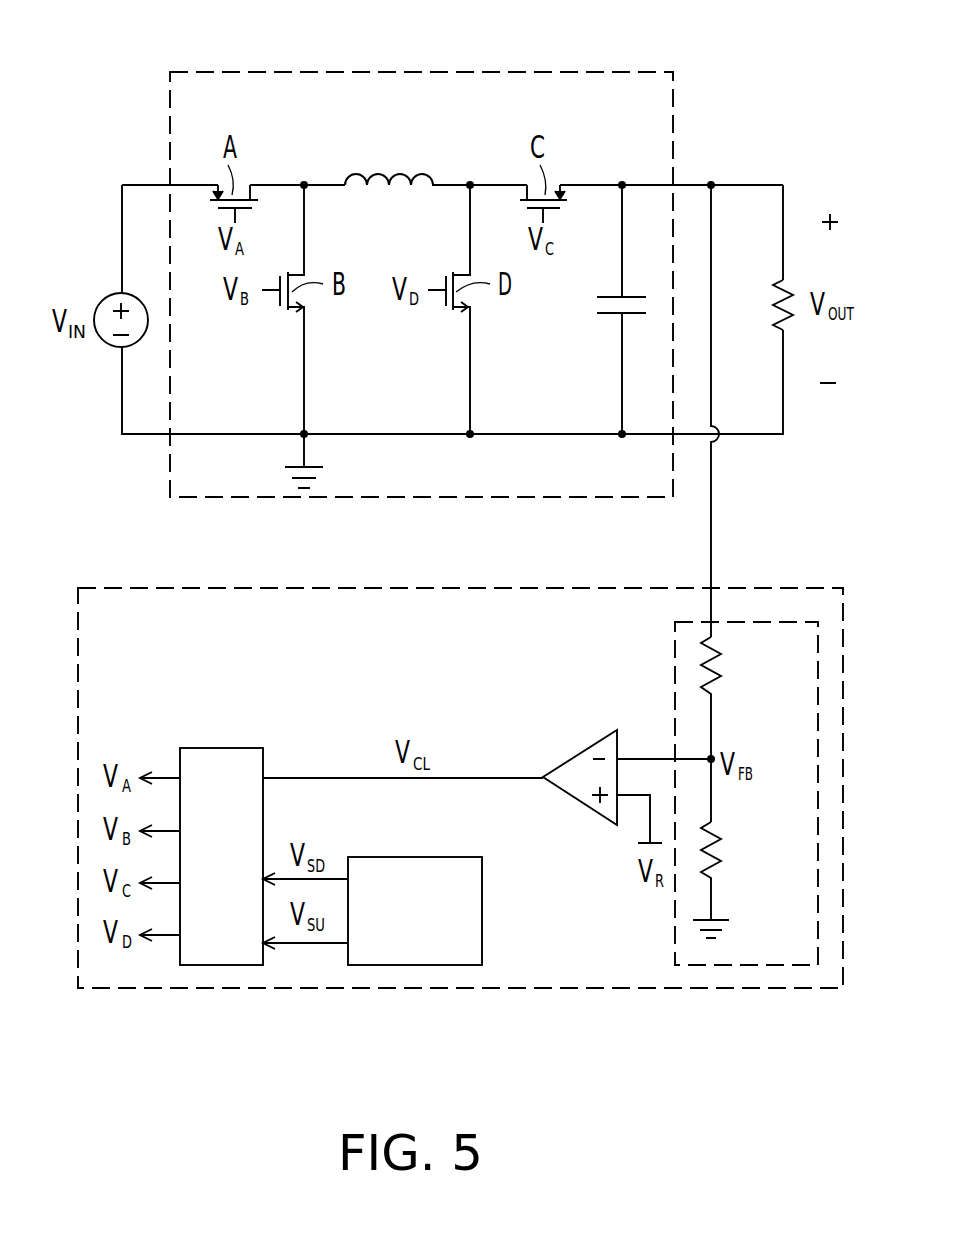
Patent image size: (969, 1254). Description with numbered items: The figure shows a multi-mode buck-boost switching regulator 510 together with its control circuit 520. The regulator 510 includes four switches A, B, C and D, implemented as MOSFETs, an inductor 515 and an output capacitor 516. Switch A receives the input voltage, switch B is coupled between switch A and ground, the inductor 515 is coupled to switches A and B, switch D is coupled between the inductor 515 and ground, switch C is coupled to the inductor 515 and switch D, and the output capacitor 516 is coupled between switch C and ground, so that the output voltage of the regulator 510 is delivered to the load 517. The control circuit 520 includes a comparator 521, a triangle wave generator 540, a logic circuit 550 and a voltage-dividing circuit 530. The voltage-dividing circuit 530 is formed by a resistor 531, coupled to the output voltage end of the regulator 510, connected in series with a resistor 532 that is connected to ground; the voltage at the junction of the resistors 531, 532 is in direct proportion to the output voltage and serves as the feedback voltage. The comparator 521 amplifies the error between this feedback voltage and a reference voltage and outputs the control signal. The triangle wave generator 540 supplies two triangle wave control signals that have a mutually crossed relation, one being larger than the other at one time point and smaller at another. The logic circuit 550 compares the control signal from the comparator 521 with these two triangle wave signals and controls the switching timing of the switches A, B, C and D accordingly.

The multi-mode buck-boost switching regulator 510 is at (473, 72).
The inductor 515 is at (378, 172).
The output capacitor 516 is at (605, 316).
The load 517 is at (773, 318).
The control circuit 520 is at (478, 990).
The comparator 521 is at (582, 753).
The voltage-dividing circuit 530 is at (772, 970).
The resistor 531 is at (718, 675).
The resistor 532 is at (718, 858).
The triangle wave generator 540 is at (482, 947).
The logic circuit 550 is at (203, 748).